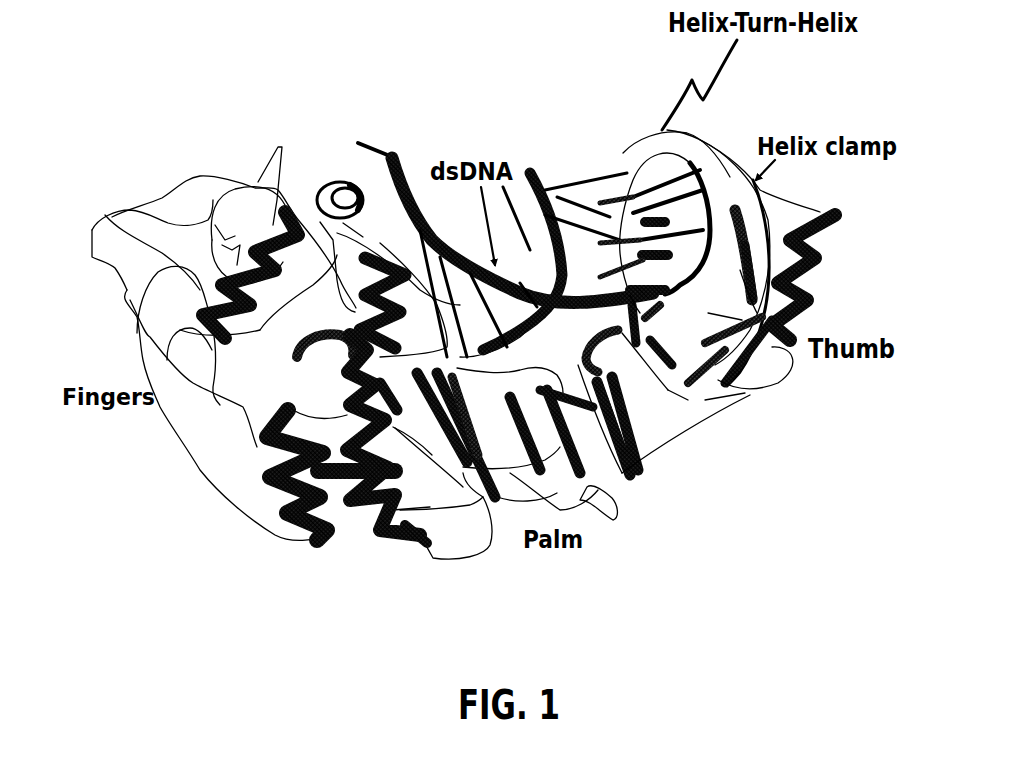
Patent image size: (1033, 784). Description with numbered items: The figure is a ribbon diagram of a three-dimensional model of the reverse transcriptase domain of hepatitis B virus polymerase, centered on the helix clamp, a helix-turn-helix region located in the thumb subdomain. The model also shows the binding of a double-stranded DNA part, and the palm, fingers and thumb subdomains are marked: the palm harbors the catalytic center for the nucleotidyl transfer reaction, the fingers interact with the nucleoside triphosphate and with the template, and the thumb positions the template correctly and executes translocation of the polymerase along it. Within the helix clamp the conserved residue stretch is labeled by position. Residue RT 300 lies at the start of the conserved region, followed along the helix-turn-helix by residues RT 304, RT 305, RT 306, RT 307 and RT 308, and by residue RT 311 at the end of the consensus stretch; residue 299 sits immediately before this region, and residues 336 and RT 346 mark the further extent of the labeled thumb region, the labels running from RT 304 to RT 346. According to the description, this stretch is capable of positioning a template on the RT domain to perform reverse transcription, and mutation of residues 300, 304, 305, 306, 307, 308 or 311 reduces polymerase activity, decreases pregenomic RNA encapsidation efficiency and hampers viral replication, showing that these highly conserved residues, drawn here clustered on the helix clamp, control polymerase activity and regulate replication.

The helix clamp residue 299 is at (670, 335).
The amino acid residue RT300 300 is at (633, 412).
The amino acid residue RT304 304 is at (706, 392).
The amino acid residue RT305 305 is at (705, 366).
The amino acid residue RT306 306 is at (755, 354).
The amino acid residue RT307 307 is at (733, 335).
The amino acid residue RT308 308 is at (743, 298).
The amino acid residue RT311 311 is at (730, 271).
The thumb helix residue 336 is at (816, 277).
The amino acid residue RT346 346 is at (705, 434).